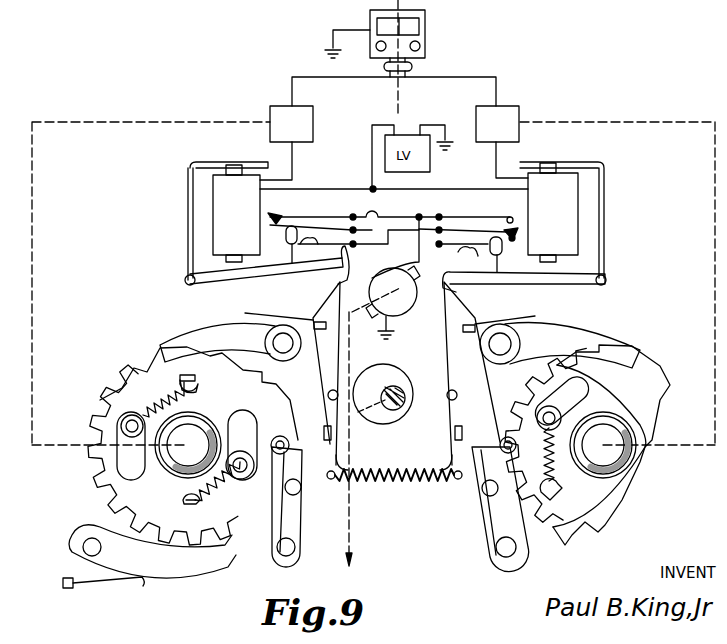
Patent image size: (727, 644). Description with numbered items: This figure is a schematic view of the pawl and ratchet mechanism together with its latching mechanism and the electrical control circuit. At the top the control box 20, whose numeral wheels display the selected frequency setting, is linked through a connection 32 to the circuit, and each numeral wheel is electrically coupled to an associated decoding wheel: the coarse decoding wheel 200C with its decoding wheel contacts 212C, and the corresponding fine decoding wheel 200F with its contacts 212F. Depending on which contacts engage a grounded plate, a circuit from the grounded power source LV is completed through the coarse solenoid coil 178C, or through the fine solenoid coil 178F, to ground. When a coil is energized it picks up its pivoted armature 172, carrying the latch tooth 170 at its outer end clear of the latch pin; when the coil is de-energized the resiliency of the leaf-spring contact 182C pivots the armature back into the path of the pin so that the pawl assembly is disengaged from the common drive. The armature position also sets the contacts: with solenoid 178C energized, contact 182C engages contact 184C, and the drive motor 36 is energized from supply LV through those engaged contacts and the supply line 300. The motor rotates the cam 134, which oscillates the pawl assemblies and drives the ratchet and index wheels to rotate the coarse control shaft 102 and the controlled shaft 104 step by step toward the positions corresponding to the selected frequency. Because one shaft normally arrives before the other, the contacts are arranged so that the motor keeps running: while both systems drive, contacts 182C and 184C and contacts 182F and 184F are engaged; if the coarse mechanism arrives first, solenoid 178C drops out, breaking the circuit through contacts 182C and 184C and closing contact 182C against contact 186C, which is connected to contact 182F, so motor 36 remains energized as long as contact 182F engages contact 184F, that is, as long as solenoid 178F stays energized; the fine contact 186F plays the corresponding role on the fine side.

The counter 20 is at (430, 42).
The connector 32 is at (412, 66).
The drive motor 36 is at (402, 318).
The coarse control shaft 102 is at (32, 290).
The controlled shaft 104 is at (715, 275).
The cam 134 is at (405, 418).
The latch tooth 170 is at (336, 268).
The pivoted armature 172 is at (252, 282).
The coarse solenoid coil 178C is at (252, 221).
The fine solenoid coil 178F is at (569, 221).
The coarse leaf-spring contact 182C is at (285, 232).
The fine leaf-spring contact 182F is at (512, 240).
The coarse contact arm 184C is at (315, 213).
The fine contact arm 184F is at (522, 205).
The coarse contact arm 186C is at (332, 244).
The fine contact arm 186F is at (470, 244).
The coarse decoding wheel 200C is at (292, 106).
The fine decoding wheel 200F is at (520, 108).
The decoding wheel contact 212C is at (282, 108).
The decoding wheel contact 212F is at (530, 110).
The supply line 300 is at (386, 267).